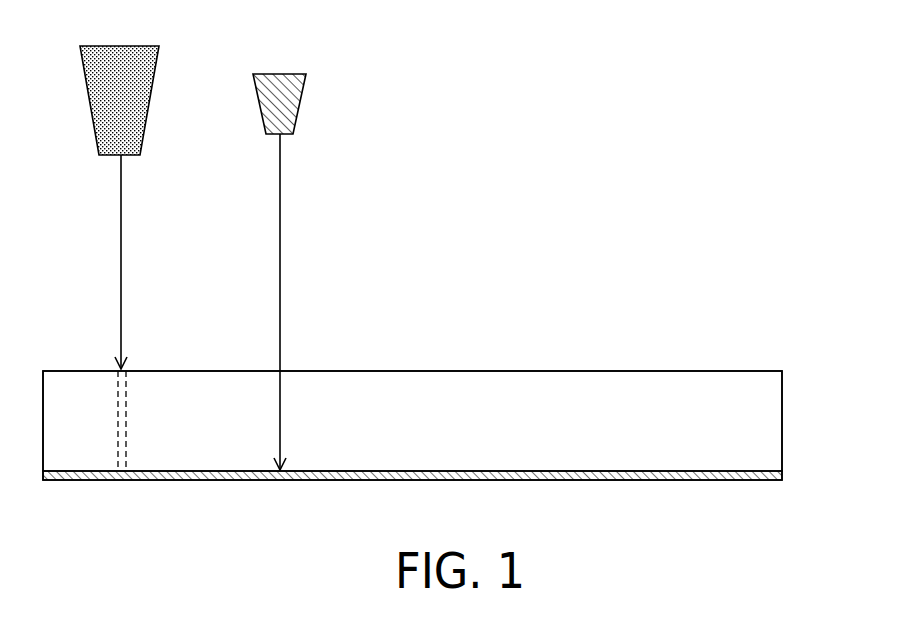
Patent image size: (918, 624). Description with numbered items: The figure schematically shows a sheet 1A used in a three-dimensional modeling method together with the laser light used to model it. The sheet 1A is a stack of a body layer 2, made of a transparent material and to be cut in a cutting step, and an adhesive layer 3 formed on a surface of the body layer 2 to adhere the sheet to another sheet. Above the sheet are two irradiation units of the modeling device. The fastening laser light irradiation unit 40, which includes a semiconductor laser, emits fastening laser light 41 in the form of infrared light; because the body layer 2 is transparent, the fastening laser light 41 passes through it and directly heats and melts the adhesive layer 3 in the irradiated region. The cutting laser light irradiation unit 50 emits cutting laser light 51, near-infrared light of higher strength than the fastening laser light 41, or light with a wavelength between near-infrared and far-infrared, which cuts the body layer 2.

The sheet 1A is at (818, 410).
The body layer 2 is at (783, 423).
The adhesive layer 3 is at (783, 475).
The fastening laser light irradiation unit 40 is at (280, 74).
The fastening laser light 41 is at (282, 250).
The cutting laser light irradiation unit 50 is at (121, 46).
The cutting laser light 51 is at (123, 250).